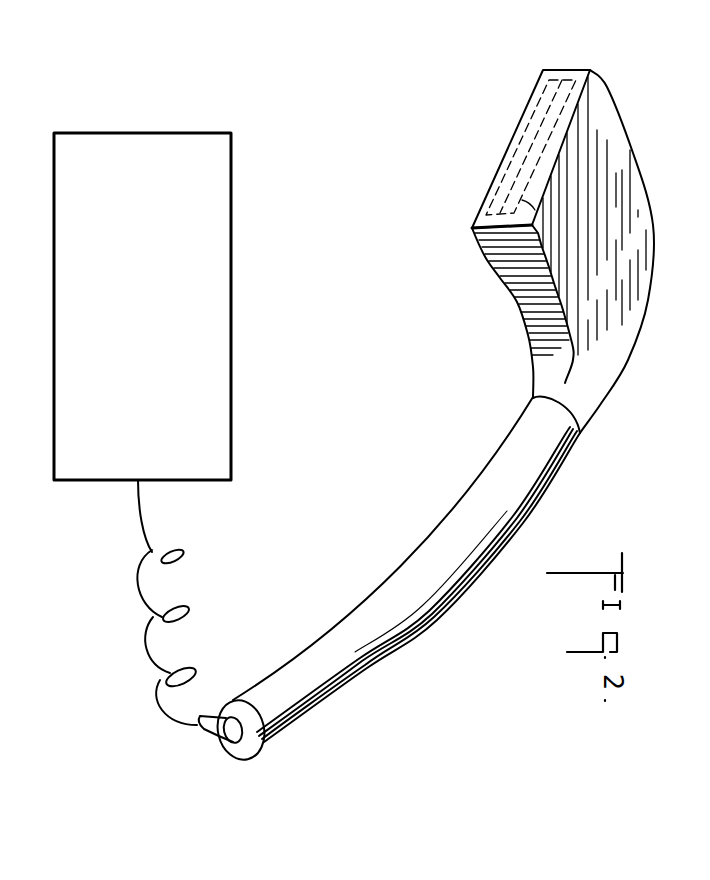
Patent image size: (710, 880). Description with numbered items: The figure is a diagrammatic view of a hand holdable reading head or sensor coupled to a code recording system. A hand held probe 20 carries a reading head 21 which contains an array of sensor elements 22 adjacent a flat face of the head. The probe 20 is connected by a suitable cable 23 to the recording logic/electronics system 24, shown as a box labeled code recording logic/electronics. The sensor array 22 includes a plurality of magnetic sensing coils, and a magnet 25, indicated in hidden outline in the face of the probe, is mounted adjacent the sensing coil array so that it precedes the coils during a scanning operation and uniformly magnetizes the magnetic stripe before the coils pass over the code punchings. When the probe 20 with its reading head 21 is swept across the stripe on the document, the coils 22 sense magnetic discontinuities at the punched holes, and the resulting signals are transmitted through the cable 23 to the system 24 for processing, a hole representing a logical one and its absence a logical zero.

The hand held probe 20 is at (498, 598).
The reading head 21 is at (653, 125).
The array of sensor elements 22 is at (527, 255).
The cable 23 is at (152, 727).
The recording logic/electronics system 24 is at (155, 133).
The magnet 25 is at (518, 122).